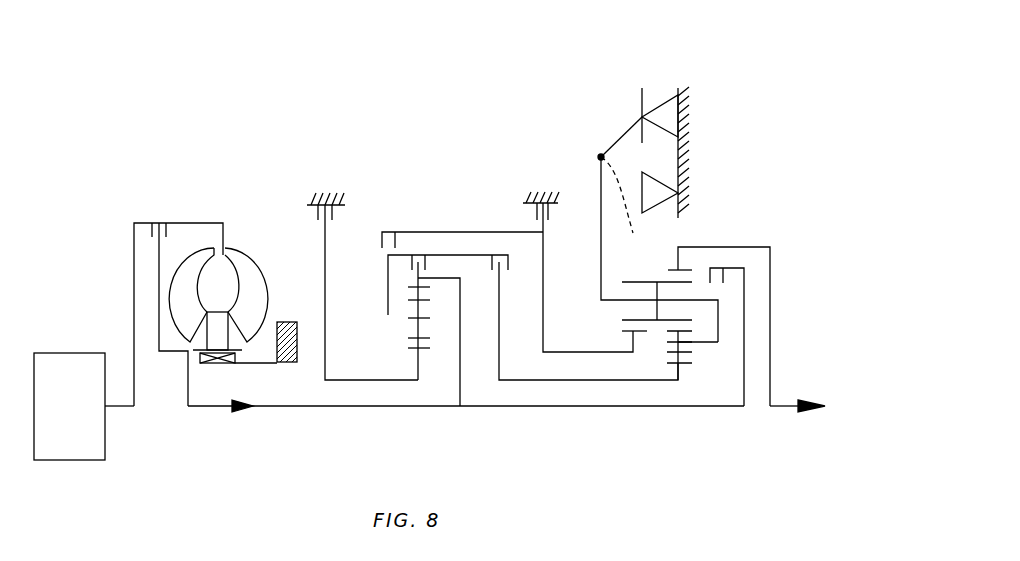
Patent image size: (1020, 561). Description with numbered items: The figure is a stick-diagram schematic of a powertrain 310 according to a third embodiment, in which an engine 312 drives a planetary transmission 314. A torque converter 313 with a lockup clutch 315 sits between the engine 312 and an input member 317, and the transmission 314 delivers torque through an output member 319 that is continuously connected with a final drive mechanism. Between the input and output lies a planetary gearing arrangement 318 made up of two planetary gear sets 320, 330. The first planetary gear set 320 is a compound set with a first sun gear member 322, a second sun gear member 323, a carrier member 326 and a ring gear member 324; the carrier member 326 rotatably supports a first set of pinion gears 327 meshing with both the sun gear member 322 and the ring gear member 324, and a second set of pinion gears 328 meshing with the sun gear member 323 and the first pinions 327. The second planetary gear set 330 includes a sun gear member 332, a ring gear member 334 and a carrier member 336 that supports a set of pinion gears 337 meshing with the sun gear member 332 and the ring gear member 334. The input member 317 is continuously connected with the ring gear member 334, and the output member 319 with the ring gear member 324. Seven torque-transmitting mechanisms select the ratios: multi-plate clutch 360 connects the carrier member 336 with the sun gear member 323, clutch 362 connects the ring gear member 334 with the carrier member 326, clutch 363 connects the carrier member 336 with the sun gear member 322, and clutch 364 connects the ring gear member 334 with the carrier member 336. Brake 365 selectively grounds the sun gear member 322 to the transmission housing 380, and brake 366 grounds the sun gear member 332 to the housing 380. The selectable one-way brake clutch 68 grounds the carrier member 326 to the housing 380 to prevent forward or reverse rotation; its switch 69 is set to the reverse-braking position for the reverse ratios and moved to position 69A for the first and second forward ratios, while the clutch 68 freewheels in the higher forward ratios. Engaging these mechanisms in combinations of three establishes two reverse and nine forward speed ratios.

The powertrain 310 is at (749, 78).
The engine 312 is at (88, 418).
The torque converter 313 is at (171, 370).
The planetary transmission 314 is at (749, 125).
The lockup clutch 315 is at (146, 248).
The input member 317 is at (278, 408).
The planetary gearing arrangement 318 is at (455, 140).
The output member 319 is at (780, 410).
The first planetary gear set 320 is at (695, 377).
The first sun gear member 322 is at (640, 333).
The second sun gear member 323 is at (685, 367).
The ring gear member 324 is at (680, 244).
The carrier member 326 is at (700, 337).
The first set of pinion gears 327 is at (655, 292).
The second set of pinion gears 328 is at (693, 347).
The second planetary gear set 330 is at (398, 354).
The sun gear member 332 is at (415, 357).
The ring gear member 334 is at (430, 286).
The carrier member 336 is at (407, 320).
The set of pinion gears 337 is at (410, 312).
The first clutch 360 is at (506, 283).
The third clutch 362 is at (730, 291).
The second clutch 363 is at (377, 250).
The clutch 364 is at (409, 279).
The brake 365 is at (560, 214).
The first brake 366 is at (310, 210).
The transmission housing 380 is at (287, 322).
The SOWBC 68 is at (601, 76).
The switch 69 is at (620, 137).
The switch position 69A is at (626, 209).